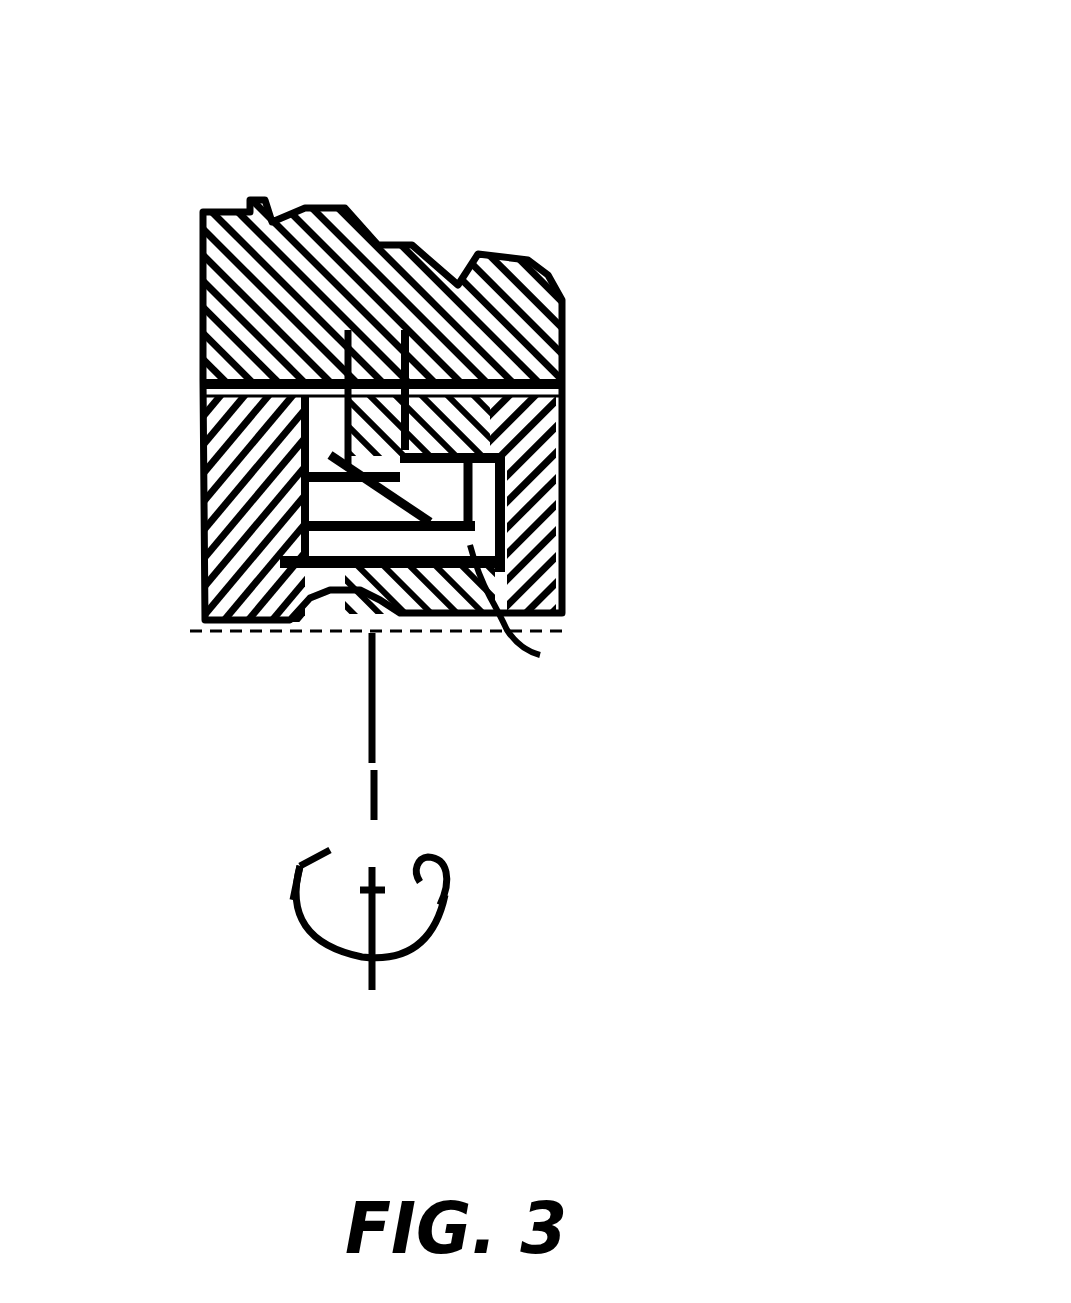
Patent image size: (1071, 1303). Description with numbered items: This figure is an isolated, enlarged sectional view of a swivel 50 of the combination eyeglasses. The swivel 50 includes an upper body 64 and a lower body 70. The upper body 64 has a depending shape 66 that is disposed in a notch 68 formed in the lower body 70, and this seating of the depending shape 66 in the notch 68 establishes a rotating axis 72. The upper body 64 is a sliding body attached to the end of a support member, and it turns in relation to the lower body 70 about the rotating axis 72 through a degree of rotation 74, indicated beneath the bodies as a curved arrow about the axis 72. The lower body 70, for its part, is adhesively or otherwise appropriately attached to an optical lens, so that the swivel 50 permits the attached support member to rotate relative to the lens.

The swivel 50 is at (622, 188).
The upper body 64 is at (580, 322).
The depending shape 66 is at (565, 515).
The notch 68 is at (540, 655).
The lower body 70 is at (210, 575).
The rotating axis 72 is at (380, 740).
The degree of rotation 74 is at (453, 887).